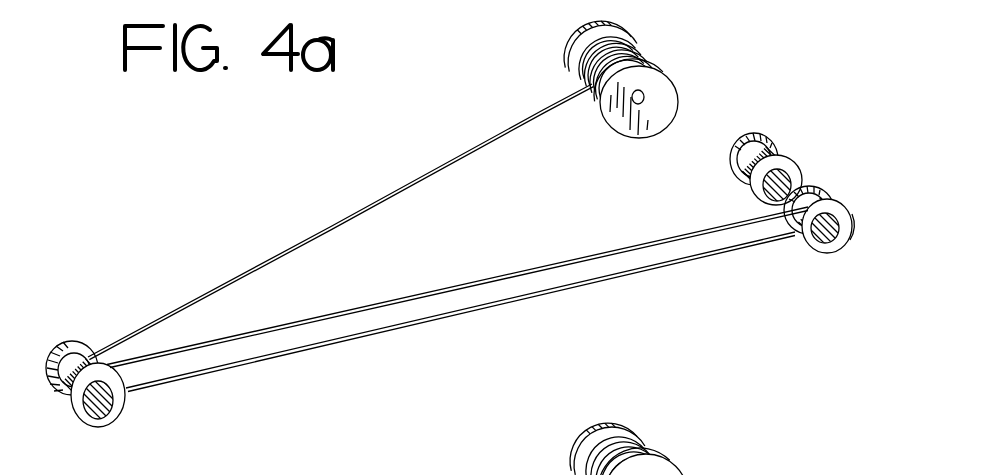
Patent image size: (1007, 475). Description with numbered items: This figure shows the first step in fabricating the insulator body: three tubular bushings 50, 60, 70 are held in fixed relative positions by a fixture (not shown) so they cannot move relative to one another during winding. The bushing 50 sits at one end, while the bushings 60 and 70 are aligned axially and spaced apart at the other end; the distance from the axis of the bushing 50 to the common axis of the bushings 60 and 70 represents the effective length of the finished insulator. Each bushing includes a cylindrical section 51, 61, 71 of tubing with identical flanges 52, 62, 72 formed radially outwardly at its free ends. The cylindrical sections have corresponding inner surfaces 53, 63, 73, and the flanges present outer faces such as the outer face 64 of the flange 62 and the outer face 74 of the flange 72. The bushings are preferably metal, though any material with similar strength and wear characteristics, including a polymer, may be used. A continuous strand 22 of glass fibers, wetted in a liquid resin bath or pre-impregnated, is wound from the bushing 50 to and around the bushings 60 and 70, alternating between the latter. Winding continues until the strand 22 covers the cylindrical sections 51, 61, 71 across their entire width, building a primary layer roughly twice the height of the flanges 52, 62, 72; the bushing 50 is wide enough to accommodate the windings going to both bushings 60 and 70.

The continuous strand 22 is at (390, 191).
The tubular bushing 50 is at (66, 365).
The cylindrical section 51 is at (73, 365).
The flange 52 is at (88, 418).
The inner surface 53 is at (107, 402).
The tubular bushing 60 is at (830, 233).
The cylindrical section 61 is at (786, 232).
The flange 62 is at (840, 217).
The inner surface 63 is at (818, 243).
The outer face 64 is at (851, 213).
The tubular bushing 70 is at (753, 157).
The cylindrical section 71 is at (755, 171).
The flange 72 is at (787, 165).
The inner surface 73 is at (782, 180).
The outer face 74 is at (748, 203).